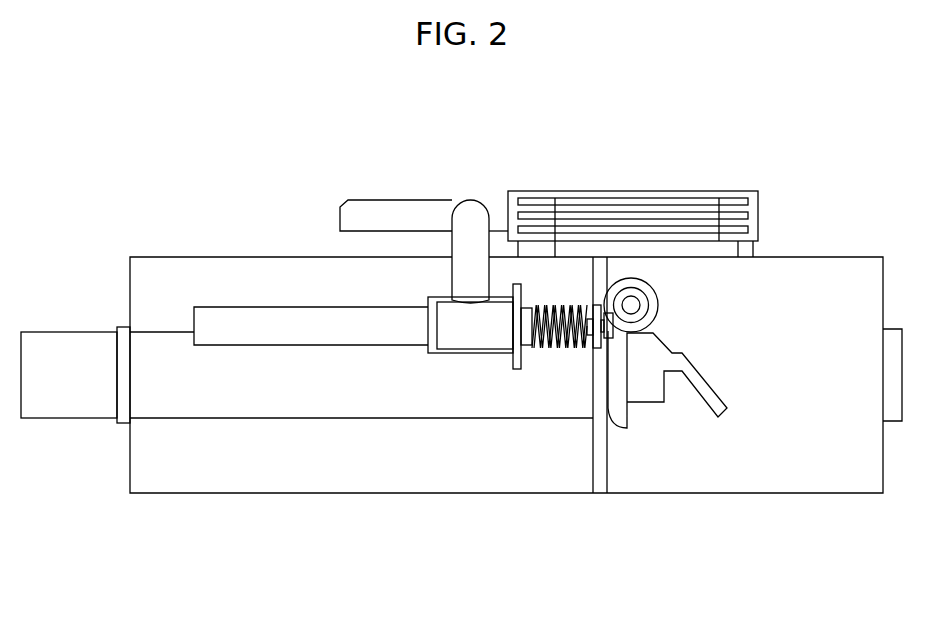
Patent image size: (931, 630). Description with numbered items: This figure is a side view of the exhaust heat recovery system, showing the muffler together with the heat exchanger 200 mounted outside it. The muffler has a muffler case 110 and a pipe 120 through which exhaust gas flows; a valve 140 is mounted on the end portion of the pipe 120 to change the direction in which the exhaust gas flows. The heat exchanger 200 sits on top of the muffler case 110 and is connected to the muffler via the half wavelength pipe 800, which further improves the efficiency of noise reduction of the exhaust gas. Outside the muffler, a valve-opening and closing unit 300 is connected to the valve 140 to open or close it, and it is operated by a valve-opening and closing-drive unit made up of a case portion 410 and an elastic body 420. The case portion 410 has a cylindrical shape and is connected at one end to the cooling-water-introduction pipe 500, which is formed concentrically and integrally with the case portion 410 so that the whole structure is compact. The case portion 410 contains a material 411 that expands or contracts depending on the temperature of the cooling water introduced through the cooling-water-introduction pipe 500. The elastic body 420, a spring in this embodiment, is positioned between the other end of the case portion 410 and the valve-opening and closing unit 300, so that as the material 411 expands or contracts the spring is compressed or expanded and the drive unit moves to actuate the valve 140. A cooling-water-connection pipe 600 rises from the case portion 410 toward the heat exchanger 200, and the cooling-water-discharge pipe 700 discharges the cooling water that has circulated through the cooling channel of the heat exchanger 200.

The muffler case 110 is at (177, 272).
The pipe 120 is at (62, 345).
The valve 140 is at (707, 378).
The heat exchanger 200 is at (706, 192).
The valve-opening and closing unit 300 is at (632, 290).
The case portion 410 is at (433, 353).
The material 411 is at (477, 333).
The elastic body 420 is at (557, 345).
The cooling-water-introduction pipe 500 is at (258, 327).
The cooling-water-connection pipe 600 is at (472, 218).
The cooling-water-discharge pipe 700 is at (396, 213).
The half wavelength pipe 800 is at (535, 248).